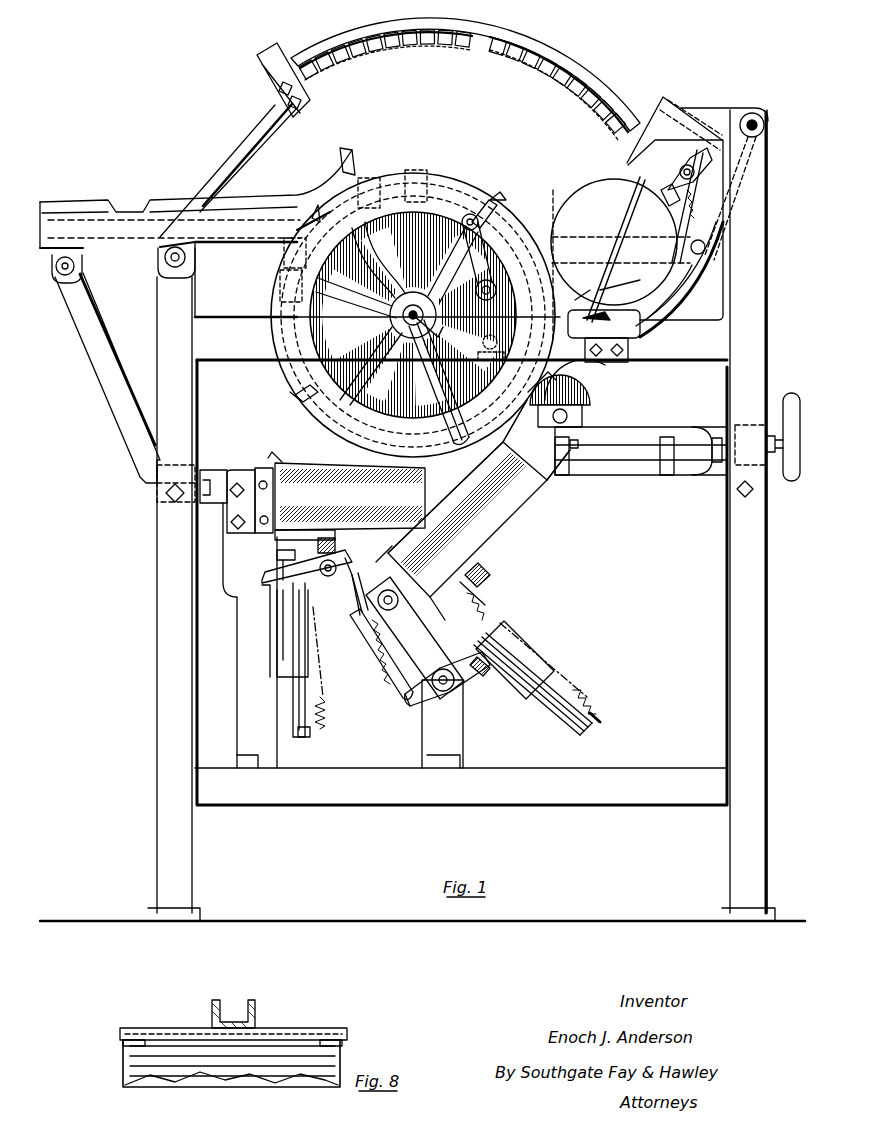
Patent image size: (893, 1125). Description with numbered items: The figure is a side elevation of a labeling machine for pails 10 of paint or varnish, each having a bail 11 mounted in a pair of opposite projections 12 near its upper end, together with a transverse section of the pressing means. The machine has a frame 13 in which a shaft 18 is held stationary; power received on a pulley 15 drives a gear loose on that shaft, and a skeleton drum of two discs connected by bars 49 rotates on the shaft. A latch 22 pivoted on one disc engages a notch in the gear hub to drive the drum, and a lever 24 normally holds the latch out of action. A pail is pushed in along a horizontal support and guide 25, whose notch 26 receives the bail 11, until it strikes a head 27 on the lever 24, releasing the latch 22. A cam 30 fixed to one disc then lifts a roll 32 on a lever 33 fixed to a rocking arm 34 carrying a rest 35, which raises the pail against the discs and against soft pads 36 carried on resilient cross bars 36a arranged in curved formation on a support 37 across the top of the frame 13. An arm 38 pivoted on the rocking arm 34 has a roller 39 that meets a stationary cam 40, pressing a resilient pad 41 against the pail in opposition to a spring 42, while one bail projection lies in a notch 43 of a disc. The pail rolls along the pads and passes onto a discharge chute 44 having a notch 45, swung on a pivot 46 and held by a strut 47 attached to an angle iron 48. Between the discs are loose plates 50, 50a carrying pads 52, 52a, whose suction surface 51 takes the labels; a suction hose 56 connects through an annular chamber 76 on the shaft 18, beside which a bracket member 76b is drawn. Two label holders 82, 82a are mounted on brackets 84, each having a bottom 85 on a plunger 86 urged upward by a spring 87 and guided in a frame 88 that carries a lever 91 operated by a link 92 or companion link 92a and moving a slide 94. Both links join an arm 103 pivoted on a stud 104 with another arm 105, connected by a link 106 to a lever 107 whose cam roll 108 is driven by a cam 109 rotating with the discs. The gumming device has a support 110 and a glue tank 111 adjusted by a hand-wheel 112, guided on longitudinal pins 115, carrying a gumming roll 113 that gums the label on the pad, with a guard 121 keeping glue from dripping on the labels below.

In FIG. 1, the pail 10 is at (614, 242).
In FIG. 8, the pail 10 is at (123, 1078).
In FIG. 1, the bail 11 is at (621, 237).
In FIG. 1, the projections 12 is at (636, 182).
In FIG. 1, the frame 13 is at (185, 408).
In FIG. 1, the pulley 15 is at (596, 378).
In FIG. 1, the shaft 18 is at (405, 310).
In FIG. 1, the latch 22 is at (458, 252).
In FIG. 1, the lever 24 is at (582, 284).
In FIG. 1, the support and guide 25 is at (672, 300).
In FIG. 1, the notch 26 is at (630, 335).
In FIG. 1, the head 27 is at (620, 279).
In FIG. 1, the cam 30 is at (420, 192).
In FIG. 1, the roll 32 is at (481, 214).
In FIG. 1, the lever 33 is at (553, 230).
In FIG. 1, the rocking arm 34 is at (715, 175).
In FIG. 1, the rest 35 is at (690, 275).
In FIG. 1, the soft pads 36 is at (605, 132).
In FIG. 8, the soft pads 36 is at (348, 1038).
In FIG. 1, the resilient cross bars 36a is at (548, 95).
In FIG. 8, the resilient cross bars 36a is at (296, 1030).
In FIG. 1, the support 37 is at (515, 52).
In FIG. 8, the support 37 is at (254, 1008).
In FIG. 1, the arm 38 is at (688, 225).
In FIG. 1, the roller 39 is at (684, 166).
In FIG. 1, the stationary cam 40 is at (705, 150).
In FIG. 1, the resilient pad 41 is at (665, 190).
In FIG. 1, the spring 42 is at (708, 198).
In FIG. 1, the notch 43 is at (413, 188).
In FIG. 1, the discharge chute 44 is at (250, 228).
In FIG. 1, the notch 45 is at (128, 212).
In FIG. 1, the pivot 46 is at (175, 268).
In FIG. 1, the strut 47 is at (112, 388).
In FIG. 1, the angle iron 48 is at (157, 492).
In FIG. 1, the bars 49 is at (262, 328).
In FIG. 1, the loose plate 50 is at (412, 172).
In FIG. 1, the loose plate 50a is at (272, 288).
In FIG. 1, the suction surface 51 is at (340, 168).
In FIG. 1, the pad 52 is at (368, 178).
In FIG. 1, the pad 52a is at (277, 259).
In FIG. 1, the suction hose 56 is at (444, 440).
In FIG. 1, the annular chamber 76 is at (395, 355).
In FIG. 1, the hub pin 76b is at (423, 329).
In FIG. 1, the label holder 82 is at (290, 470).
In FIG. 1, the label holder 82a is at (472, 526).
In FIG. 1, the brackets 84 is at (210, 505).
In FIG. 1, the bottom 85 is at (386, 520).
In FIG. 1, the plunger 86 is at (303, 740).
In FIG. 1, the spring 87 is at (326, 720).
In FIG. 1, the frame 88 is at (270, 634).
In FIG. 1, the lever 91 is at (264, 576).
In FIG. 1, the link 92 is at (352, 608).
In FIG. 1, the companion link 92a is at (386, 672).
In FIG. 1, the slide 94 is at (277, 553).
In FIG. 1, the arm 103 is at (360, 620).
In FIG. 1, the stud 104 is at (420, 622).
In FIG. 1, the arm 105 is at (340, 556).
In FIG. 1, the link 106 is at (388, 535).
In FIG. 1, the lever 107 is at (500, 345).
In FIG. 1, the cam roll 108 is at (498, 292).
In FIG. 1, the cam 109 is at (470, 212).
In FIG. 1, the support 110 is at (654, 475).
In FIG. 1, the tank 111 is at (700, 426).
In FIG. 1, the hand-wheel 112 is at (790, 393).
In FIG. 1, the gumming roll 113 is at (592, 412).
In FIG. 1, the longitudinal pins 115 is at (580, 443).
In FIG. 1, the guard 121 is at (555, 455).